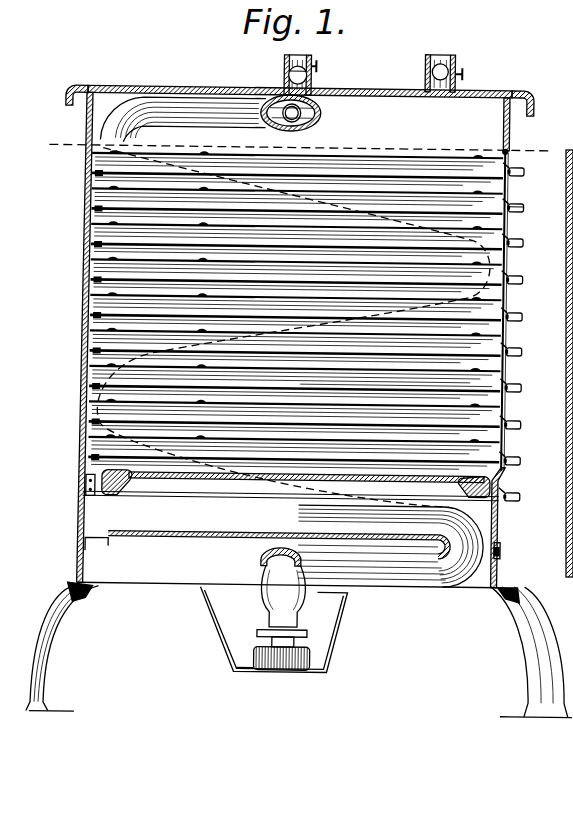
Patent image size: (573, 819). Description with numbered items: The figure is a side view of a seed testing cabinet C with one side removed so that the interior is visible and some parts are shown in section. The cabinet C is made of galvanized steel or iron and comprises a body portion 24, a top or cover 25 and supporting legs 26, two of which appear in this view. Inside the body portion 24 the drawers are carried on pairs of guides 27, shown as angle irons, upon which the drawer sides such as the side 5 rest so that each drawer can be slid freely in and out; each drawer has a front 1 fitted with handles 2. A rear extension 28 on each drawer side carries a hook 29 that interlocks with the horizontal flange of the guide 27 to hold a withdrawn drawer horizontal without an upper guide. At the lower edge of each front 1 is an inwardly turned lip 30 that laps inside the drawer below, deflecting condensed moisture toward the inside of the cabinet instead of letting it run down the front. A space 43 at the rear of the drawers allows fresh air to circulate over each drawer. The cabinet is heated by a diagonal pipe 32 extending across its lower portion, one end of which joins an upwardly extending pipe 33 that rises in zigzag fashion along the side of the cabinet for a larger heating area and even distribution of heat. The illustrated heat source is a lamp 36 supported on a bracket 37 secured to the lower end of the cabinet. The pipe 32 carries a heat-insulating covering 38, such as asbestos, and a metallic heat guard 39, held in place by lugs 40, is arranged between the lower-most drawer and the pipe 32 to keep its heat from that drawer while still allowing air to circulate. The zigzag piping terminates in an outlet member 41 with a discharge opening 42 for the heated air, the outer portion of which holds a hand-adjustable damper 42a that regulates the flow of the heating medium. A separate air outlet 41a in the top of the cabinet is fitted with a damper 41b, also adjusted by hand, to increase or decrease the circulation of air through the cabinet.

The front 1 is at (505, 331).
The handles 2 is at (526, 437).
The side 5 is at (483, 381).
The body portion 24 is at (83, 415).
The top or cover 25 is at (151, 89).
The supporting legs 26 is at (75, 600).
The guides 27 is at (568, 176).
The rear extension 28 is at (567, 515).
The hook 29 is at (568, 197).
The inwardly turned lip 30 is at (508, 212).
The pipe 32 is at (418, 570).
The upwardly extending pipe 33 is at (181, 104).
The lamp 36 is at (255, 662).
The bracket 37 is at (228, 621).
The covering 38 is at (386, 590).
The heat guard 39 is at (290, 499).
The lugs 40 is at (100, 545).
The outlet member 41 is at (318, 114).
The air outlet 41a is at (452, 57).
The damper 41b is at (462, 83).
The discharge opening 42 is at (308, 80).
The damper 42a is at (281, 67).
The space 43 is at (531, 228).
The cabinet C is at (268, 327).